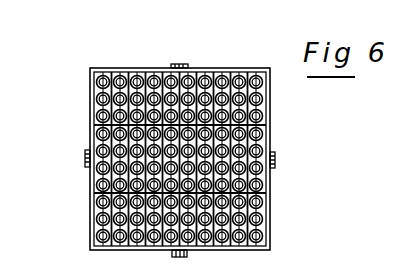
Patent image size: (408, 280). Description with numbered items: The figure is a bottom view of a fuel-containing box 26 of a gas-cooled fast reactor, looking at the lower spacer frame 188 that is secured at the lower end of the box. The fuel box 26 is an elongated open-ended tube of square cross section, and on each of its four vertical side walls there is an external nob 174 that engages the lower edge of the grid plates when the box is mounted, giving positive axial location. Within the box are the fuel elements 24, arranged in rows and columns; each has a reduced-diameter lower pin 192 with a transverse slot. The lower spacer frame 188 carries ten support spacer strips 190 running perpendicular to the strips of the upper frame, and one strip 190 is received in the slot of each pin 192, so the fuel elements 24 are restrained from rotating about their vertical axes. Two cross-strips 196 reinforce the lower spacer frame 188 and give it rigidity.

The lower spacer frame 188 is at (88, 90).
The fuel box 26 is at (275, 105).
The cross-strips 196 is at (100, 126).
The support spacer strips 190 is at (258, 69).
The lower pin 192 is at (262, 218).
The fuel elements 24 is at (258, 218).
The nob 174 is at (176, 64).